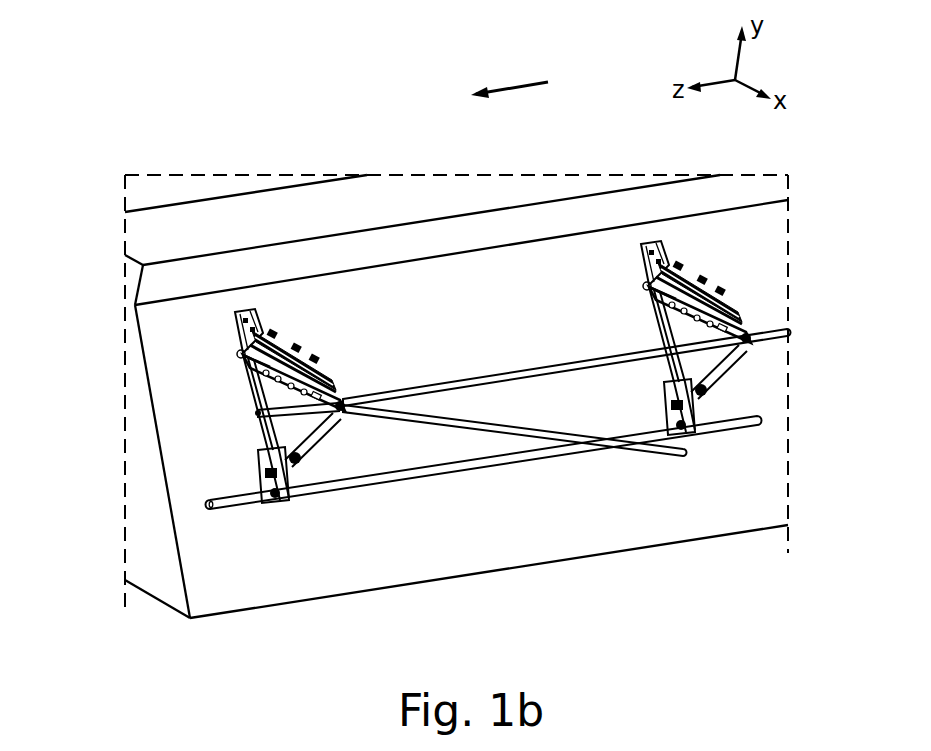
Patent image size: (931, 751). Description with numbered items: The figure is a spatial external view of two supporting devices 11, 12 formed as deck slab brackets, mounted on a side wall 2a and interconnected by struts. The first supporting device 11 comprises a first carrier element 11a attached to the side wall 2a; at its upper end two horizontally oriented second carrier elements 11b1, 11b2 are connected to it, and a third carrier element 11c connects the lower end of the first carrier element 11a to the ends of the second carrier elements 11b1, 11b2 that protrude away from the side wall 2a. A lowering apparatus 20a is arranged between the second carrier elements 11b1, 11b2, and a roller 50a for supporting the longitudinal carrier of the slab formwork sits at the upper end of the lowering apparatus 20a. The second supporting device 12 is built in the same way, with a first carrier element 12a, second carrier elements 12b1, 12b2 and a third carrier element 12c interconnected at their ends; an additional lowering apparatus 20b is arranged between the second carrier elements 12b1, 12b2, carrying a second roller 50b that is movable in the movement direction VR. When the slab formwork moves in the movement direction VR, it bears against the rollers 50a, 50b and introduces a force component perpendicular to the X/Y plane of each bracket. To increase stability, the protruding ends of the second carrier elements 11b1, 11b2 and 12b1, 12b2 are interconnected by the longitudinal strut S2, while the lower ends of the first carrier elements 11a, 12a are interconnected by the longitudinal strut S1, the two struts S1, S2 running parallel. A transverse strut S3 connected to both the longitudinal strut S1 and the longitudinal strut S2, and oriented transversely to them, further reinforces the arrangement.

The side wall 2a is at (497, 288).
The supporting device 11 is at (239, 465).
The first carrier element 11a is at (258, 428).
The second carrier element 11b1 is at (240, 355).
The second carrier element 11b2 is at (320, 378).
The third carrier element 11c is at (312, 440).
The second supporting device 12 is at (730, 298).
The first carrier element 12a is at (657, 330).
The second carrier element 12b1 is at (650, 295).
The second carrier element 12b2 is at (752, 316).
The third carrier element 12c is at (722, 368).
The lowering apparatus 20a is at (313, 367).
The additional lowering apparatus 20b is at (718, 305).
The roller 50a is at (290, 346).
The second roller 50b is at (690, 272).
The longitudinal strut S1 is at (457, 470).
The longitudinal strut S2 is at (500, 380).
The transverse strut S3 is at (540, 430).
The movement direction VR is at (507, 82).